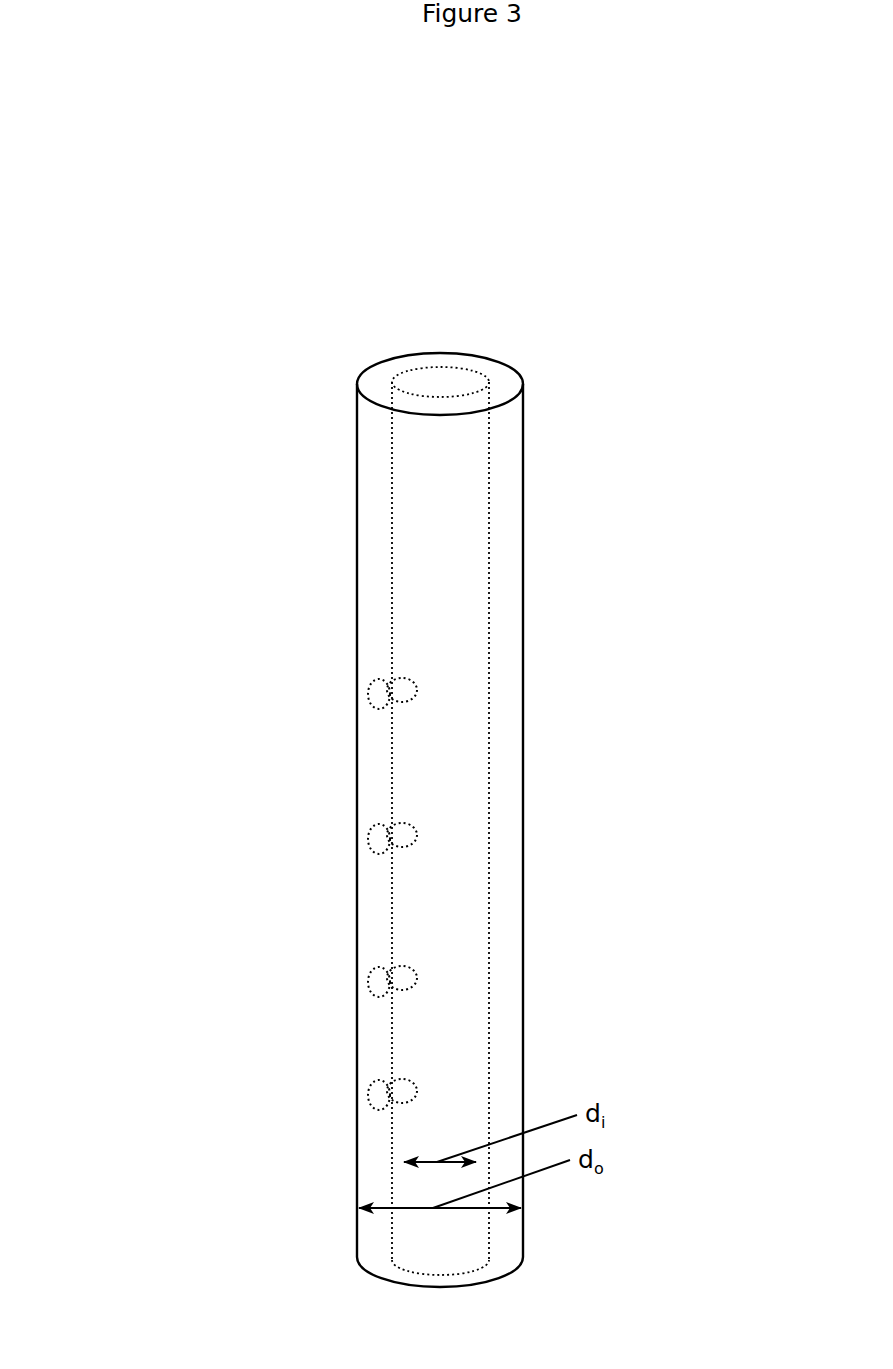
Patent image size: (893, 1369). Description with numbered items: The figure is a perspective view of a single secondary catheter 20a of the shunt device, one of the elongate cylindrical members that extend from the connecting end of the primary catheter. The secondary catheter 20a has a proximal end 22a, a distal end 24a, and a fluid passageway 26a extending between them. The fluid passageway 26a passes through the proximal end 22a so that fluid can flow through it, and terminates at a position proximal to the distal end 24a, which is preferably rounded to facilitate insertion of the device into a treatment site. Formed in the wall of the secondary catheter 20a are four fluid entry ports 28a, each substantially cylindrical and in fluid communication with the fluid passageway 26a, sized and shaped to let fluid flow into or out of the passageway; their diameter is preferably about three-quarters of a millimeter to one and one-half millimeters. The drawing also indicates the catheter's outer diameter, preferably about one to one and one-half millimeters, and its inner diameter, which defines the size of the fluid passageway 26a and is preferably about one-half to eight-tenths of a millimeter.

The secondary catheter 20a is at (210, 213).
The proximal end 22a is at (336, 458).
The distal end 24a is at (336, 1227).
The fluid passageway 26a is at (438, 380).
The fluid entry port 28a is at (377, 697).